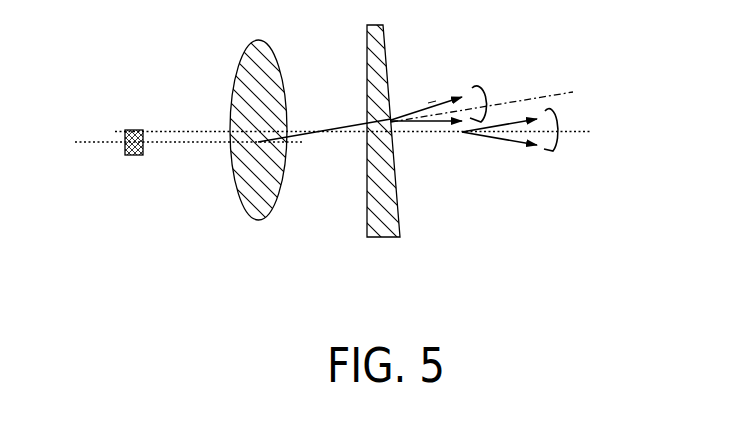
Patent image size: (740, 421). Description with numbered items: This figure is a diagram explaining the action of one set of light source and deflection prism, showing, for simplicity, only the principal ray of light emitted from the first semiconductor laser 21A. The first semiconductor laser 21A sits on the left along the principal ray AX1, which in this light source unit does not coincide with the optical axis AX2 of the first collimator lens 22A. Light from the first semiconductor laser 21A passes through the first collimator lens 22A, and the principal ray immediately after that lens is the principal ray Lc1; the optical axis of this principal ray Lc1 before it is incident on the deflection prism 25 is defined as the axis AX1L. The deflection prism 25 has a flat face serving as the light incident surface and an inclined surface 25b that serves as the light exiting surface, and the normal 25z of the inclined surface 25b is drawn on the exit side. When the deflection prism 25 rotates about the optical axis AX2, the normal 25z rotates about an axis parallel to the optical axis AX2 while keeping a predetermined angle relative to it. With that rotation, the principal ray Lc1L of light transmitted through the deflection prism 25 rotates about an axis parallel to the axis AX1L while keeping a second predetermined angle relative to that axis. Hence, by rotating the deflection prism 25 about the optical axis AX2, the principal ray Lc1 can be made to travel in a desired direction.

The first semiconductor laser 21A is at (138, 156).
The first collimator lens 22A is at (244, 208).
The deflection prism 25 is at (388, 238).
The inclined surface 25b is at (397, 152).
The normal of the inclined surface 25z is at (484, 123).
The principal ray AX1 is at (95, 144).
The optical axis AX2 is at (577, 132).
The optical axis of the principal ray before the deflection prism AX1L is at (522, 90).
The principal ray Lc1 is at (316, 134).
The principal ray of light transmitted through the deflection prism Lc1L is at (432, 108).